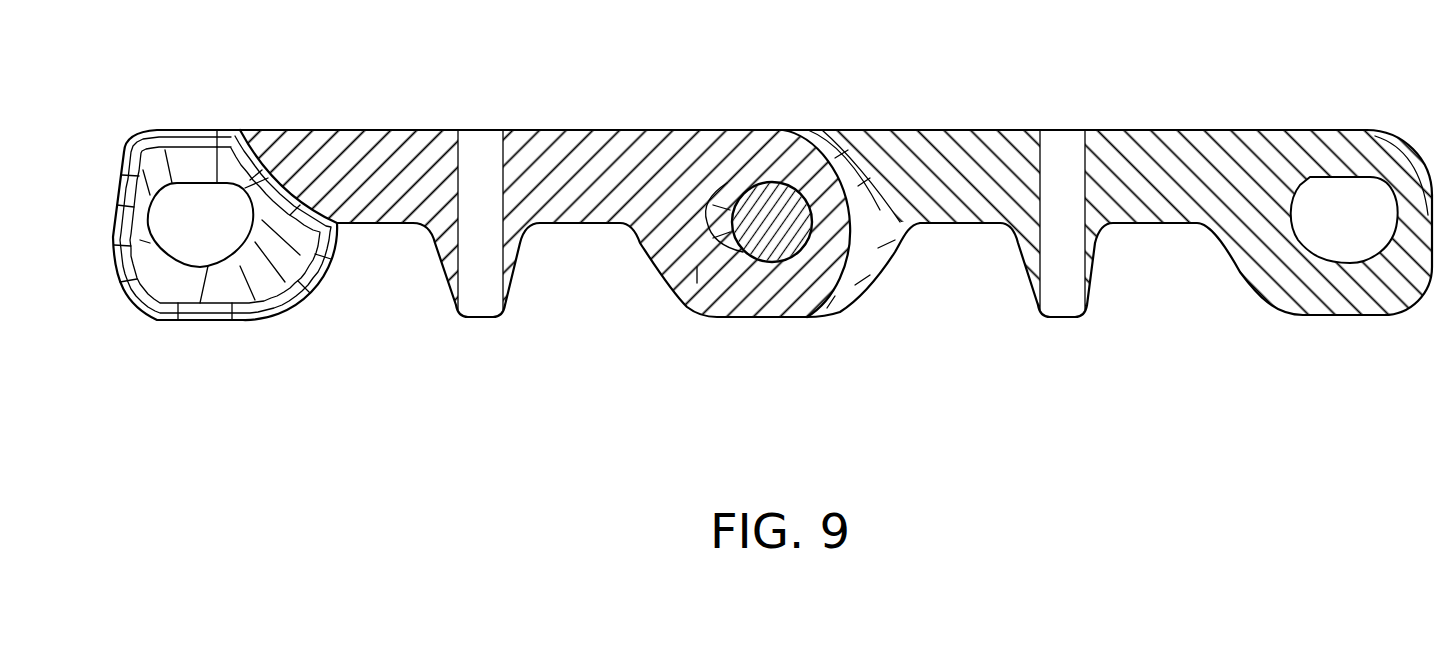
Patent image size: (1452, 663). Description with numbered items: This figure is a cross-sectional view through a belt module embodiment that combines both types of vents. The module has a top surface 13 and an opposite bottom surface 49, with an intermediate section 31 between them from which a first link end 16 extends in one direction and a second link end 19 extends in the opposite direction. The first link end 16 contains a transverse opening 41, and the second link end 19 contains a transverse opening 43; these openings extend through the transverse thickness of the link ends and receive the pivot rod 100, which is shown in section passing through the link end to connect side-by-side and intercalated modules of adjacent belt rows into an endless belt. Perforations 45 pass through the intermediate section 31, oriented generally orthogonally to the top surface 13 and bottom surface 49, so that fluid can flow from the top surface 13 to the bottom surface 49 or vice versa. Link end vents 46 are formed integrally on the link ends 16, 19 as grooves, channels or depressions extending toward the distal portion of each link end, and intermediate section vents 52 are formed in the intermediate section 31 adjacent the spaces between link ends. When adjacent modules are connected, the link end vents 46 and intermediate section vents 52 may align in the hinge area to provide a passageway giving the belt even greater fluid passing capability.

The top surface 13 is at (1192, 127).
The first plurality of link ends 16 is at (190, 143).
The second plurality of link ends 19 is at (693, 300).
The intermediate section 31 is at (612, 130).
The transverse opening 41 is at (180, 247).
The transverse opening 43 is at (1330, 228).
The perforations 45 is at (485, 147).
The link end vents 46 is at (797, 128).
The bottom surface 49 is at (968, 223).
The intermediate section vents 52 is at (833, 128).
The pivot rod 100 is at (775, 230).